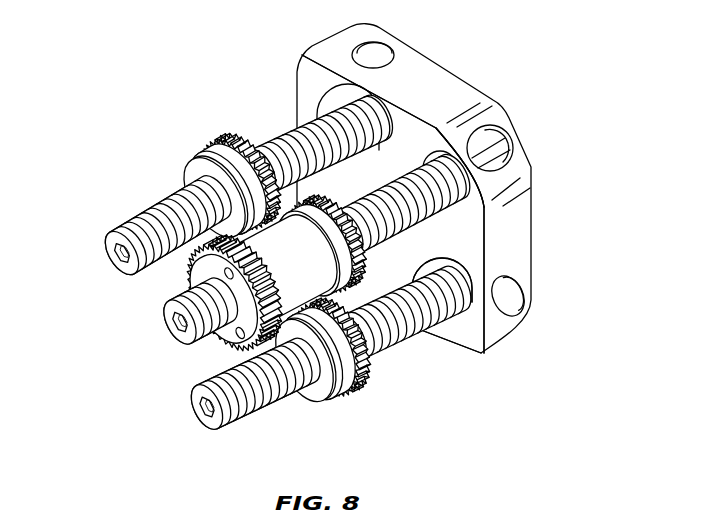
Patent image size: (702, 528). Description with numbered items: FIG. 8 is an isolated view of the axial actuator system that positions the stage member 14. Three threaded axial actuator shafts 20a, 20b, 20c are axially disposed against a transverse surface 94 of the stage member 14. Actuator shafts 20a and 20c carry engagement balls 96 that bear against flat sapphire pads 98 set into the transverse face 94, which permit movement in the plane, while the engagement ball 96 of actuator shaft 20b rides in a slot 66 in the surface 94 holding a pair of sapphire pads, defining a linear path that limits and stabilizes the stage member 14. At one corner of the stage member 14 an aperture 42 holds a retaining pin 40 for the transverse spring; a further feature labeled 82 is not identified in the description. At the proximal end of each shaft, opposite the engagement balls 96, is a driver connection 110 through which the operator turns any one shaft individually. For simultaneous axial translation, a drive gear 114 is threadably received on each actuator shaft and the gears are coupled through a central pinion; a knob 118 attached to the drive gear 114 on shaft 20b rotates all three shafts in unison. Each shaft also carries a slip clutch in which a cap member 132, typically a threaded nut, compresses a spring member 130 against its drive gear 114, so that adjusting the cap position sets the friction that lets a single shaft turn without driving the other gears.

The stage member 14 is at (433, 75).
The axial actuator shaft 20a is at (288, 133).
The axial actuator shaft 20b is at (423, 215).
The axial actuator shaft 20c is at (237, 415).
The retaining pin 40 is at (507, 127).
The aperture 42 is at (502, 110).
The slot 66 is at (487, 210).
The mounting hole 82 is at (378, 48).
The transverse surface 94 is at (473, 250).
The engagement ball 96 is at (296, 67).
The sapphire pad 98 is at (382, 136).
The driver connection 110 is at (110, 262).
The drive gear 114 is at (207, 150).
The knob 118 is at (232, 332).
The spring member 130 is at (210, 147).
The cap member 132 is at (190, 177).